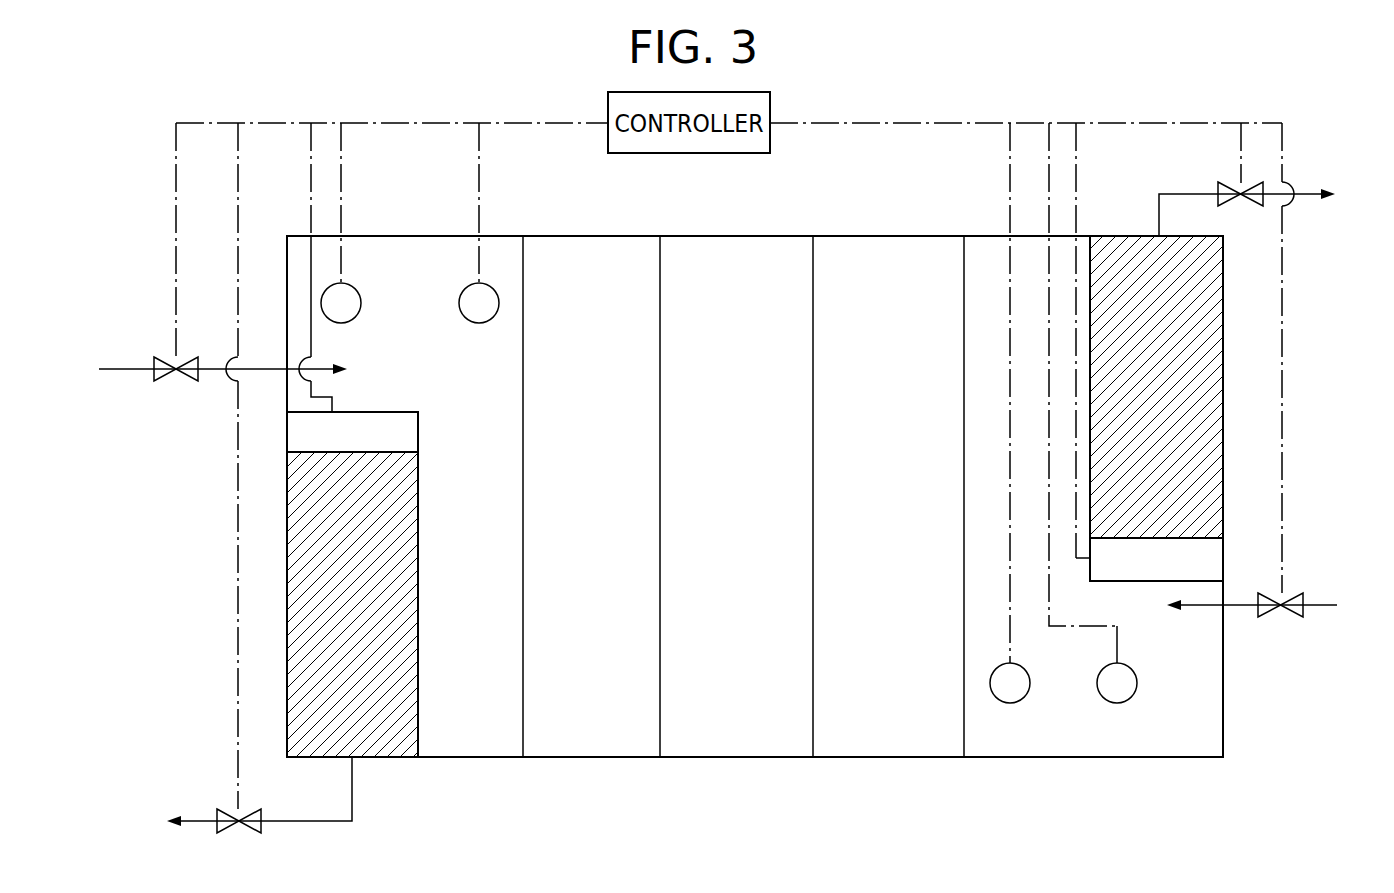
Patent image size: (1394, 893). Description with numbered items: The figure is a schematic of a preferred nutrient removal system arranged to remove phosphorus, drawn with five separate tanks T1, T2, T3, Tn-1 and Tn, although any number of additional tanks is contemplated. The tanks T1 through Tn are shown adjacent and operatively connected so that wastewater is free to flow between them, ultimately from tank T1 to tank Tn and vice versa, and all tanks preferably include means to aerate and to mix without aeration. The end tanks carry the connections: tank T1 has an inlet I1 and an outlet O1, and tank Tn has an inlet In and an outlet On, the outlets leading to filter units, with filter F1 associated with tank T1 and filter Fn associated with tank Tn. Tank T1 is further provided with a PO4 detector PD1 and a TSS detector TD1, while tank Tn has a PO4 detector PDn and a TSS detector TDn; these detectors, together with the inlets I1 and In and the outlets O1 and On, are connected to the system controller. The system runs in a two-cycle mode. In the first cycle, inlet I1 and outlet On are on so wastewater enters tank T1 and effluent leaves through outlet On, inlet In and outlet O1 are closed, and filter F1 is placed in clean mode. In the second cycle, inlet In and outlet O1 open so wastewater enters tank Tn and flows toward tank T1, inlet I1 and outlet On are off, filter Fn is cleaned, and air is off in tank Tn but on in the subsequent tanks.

The inlet I1 is at (213, 368).
The outlet O1 is at (244, 796).
The inlet In is at (1262, 604).
The outlet On is at (1266, 206).
The filter F1 is at (273, 552).
The filter Fn is at (1239, 375).
The TSS detector TD1 is at (364, 286).
The PO4 detector PD1 is at (488, 338).
The TSS detector TDn is at (1150, 694).
The PO4 detector PDn is at (1008, 719).
The tank T1 is at (491, 496).
The tank T2 is at (618, 496).
The tank T3 is at (770, 496).
The tank Tn-1 is at (915, 496).
The tank Tn is at (1137, 669).